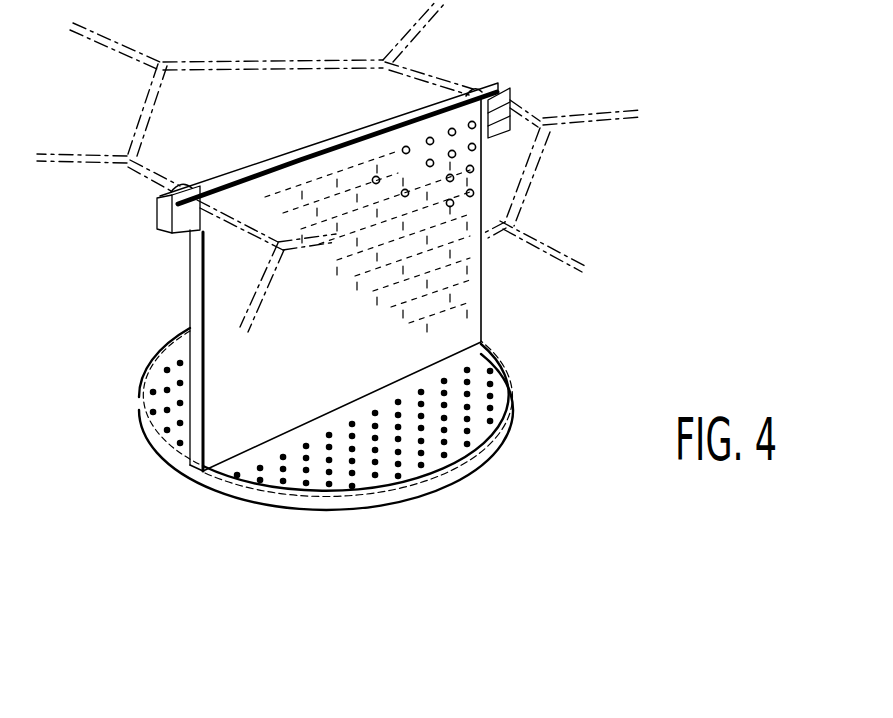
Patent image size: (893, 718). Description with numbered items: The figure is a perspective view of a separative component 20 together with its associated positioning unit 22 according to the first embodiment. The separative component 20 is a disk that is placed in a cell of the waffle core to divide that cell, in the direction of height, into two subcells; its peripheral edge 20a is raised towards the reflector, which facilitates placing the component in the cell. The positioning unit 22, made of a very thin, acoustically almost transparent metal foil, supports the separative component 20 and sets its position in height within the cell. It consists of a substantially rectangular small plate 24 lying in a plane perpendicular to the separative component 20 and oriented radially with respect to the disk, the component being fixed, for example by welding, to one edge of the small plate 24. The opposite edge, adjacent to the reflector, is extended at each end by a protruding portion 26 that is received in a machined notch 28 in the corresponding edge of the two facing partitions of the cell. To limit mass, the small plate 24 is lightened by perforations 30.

The separative component 20 is at (296, 512).
The peripheral edge 20a is at (504, 366).
The positioning unit 22 is at (483, 300).
The small plate 24 is at (228, 286).
The protruding portion 26 is at (180, 210).
The notch 28 is at (185, 186).
The perforations 30 is at (466, 184).